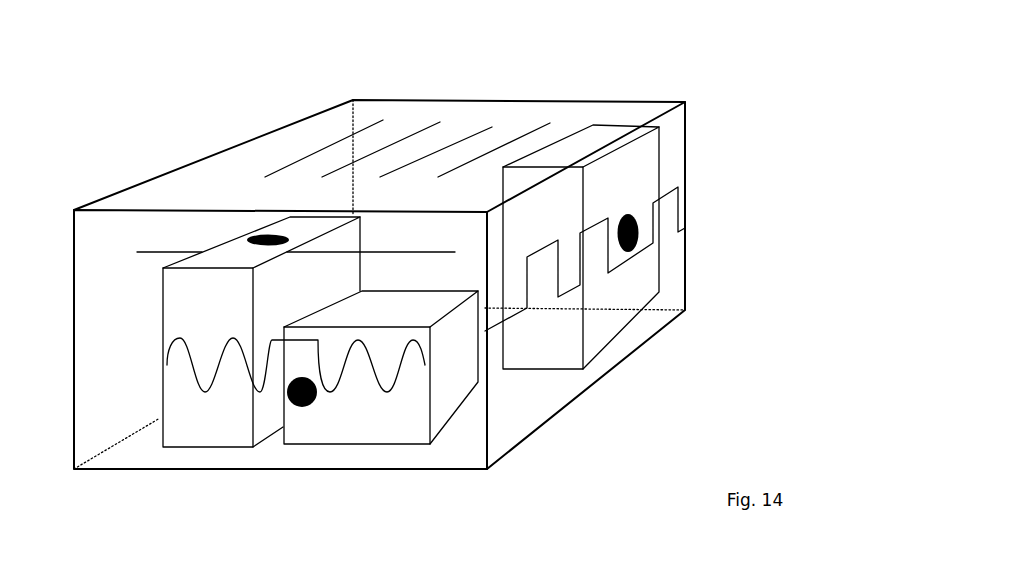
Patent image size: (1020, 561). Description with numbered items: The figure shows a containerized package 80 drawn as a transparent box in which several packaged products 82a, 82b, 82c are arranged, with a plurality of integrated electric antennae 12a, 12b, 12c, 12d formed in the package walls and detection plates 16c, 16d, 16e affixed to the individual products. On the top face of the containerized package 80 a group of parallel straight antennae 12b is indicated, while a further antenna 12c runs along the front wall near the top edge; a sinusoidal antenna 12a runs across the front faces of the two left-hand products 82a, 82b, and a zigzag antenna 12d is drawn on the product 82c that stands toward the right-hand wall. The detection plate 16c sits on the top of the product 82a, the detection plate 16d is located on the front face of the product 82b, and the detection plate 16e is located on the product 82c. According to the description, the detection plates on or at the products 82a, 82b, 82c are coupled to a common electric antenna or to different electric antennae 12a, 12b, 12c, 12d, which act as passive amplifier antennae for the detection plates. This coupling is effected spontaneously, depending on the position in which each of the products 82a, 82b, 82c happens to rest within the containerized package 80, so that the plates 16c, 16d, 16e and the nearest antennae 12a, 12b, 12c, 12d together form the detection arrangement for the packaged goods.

The containerized package 80 is at (625, 113).
The integrated electric antenna 12a is at (400, 386).
The integrated electric antenna 12b is at (383, 120).
The integrated electric antenna 12c is at (416, 251).
The integrated electric antenna 12d is at (518, 320).
The detection plate 16c is at (258, 232).
The detection plate 16d is at (311, 410).
The detection plate 16e is at (640, 233).
The packaged product 82a is at (212, 415).
The packaged product 82b is at (398, 426).
The packaged product 82c is at (608, 327).